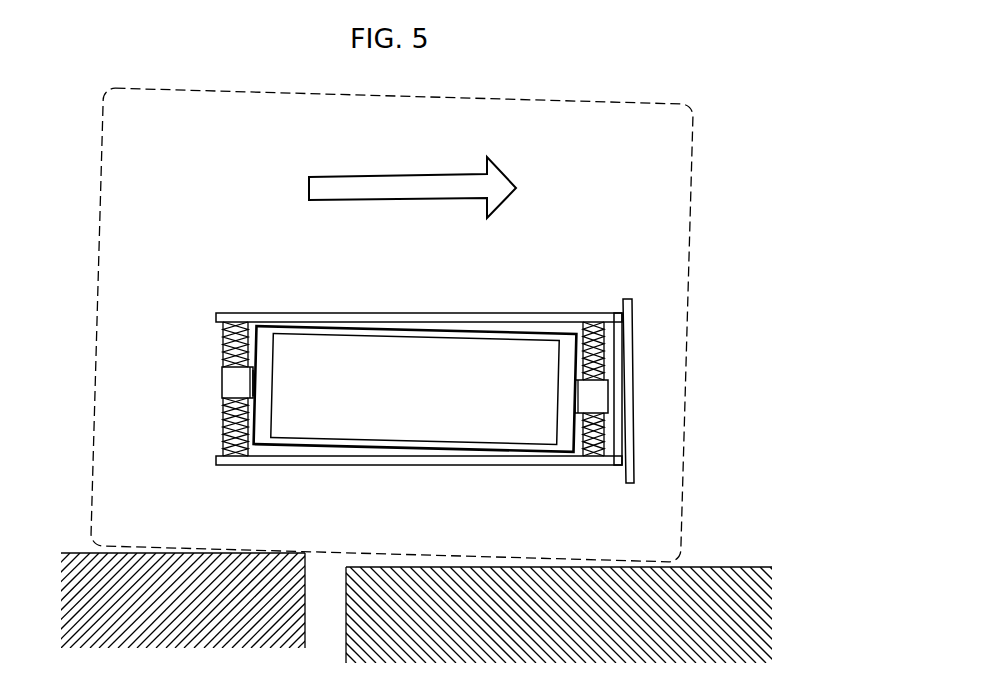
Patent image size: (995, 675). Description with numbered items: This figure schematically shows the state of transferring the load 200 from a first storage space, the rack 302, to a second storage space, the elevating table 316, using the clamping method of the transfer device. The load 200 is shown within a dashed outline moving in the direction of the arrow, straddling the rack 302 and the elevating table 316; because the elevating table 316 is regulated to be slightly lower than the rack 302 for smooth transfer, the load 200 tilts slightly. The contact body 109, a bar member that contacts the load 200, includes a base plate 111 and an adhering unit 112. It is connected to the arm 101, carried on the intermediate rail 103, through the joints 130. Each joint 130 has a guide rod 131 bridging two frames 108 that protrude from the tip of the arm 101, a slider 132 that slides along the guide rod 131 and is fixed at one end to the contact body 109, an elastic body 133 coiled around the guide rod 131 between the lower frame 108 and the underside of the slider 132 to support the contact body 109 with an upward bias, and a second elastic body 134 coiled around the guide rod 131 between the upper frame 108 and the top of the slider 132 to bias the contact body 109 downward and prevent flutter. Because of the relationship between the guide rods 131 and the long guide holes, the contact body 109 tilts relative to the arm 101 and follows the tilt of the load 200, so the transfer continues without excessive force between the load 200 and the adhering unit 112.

The load 200 is at (165, 141).
The frames 108 is at (366, 313).
The arm 101 is at (615, 316).
The intermediate rail 103 is at (630, 299).
The base plate 111 is at (481, 330).
The contact body 109 is at (437, 402).
The adhering unit 112 is at (478, 430).
The joint 130 is at (234, 392).
The guide rod 131 is at (237, 464).
The slider 132 is at (256, 384).
The elastic body 133 is at (222, 433).
The second elastic body 134 is at (222, 350).
The rack 302 is at (173, 616).
The elevating table 316 is at (561, 632).